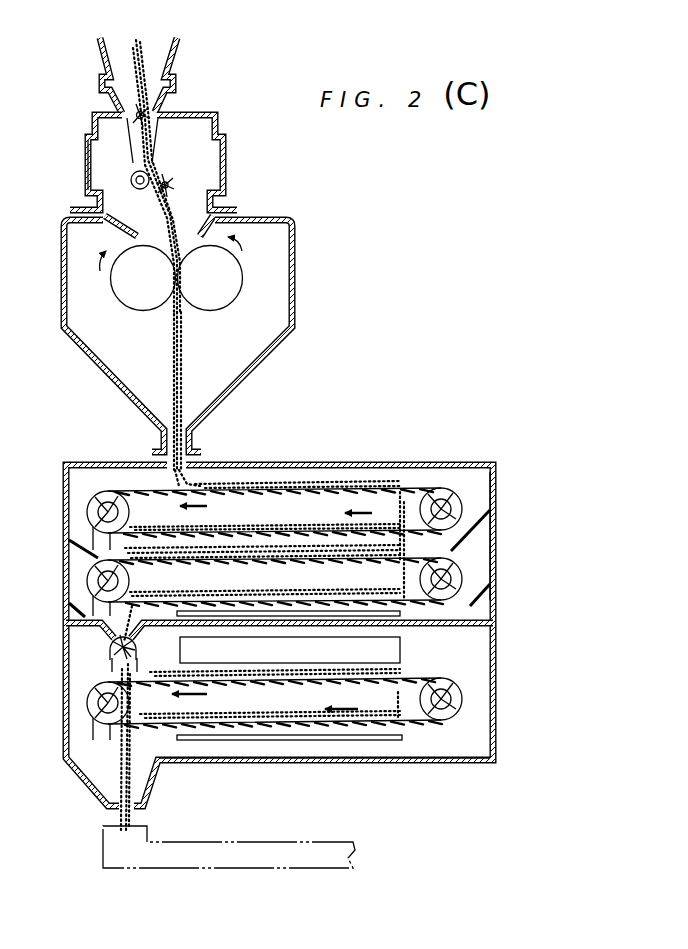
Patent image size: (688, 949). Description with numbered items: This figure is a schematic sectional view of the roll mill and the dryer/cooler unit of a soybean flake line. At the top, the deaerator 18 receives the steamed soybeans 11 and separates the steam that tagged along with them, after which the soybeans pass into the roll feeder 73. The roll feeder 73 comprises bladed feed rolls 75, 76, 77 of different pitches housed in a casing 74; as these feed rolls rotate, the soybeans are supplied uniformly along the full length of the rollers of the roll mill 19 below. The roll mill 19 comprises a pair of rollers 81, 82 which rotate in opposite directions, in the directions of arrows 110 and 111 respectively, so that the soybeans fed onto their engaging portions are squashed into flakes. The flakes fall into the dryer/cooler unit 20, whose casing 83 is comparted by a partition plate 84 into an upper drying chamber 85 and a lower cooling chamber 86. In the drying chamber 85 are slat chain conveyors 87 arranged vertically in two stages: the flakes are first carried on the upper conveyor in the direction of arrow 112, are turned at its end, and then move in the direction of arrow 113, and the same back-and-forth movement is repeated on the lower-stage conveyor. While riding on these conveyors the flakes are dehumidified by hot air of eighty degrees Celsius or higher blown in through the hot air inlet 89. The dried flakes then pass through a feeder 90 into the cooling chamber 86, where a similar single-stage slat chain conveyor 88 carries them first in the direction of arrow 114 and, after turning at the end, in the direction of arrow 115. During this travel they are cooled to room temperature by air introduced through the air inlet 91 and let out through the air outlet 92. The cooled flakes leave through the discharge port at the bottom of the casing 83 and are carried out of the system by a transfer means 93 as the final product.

The raw soybeans 11 is at (156, 40).
The deaerator 18 is at (103, 57).
The roll feeder 73 is at (220, 125).
The casing 74 is at (92, 146).
The bladed feed roll 75 is at (160, 105).
The bladed feed roll 76 is at (130, 183).
The bladed feed roll 77 is at (170, 188).
The roll mill 19 is at (295, 276).
The roller 81 is at (137, 313).
The roller 82 is at (220, 313).
The arrow 110 is at (100, 269).
The arrow 111 is at (245, 244).
The dryer/cooler unit 20 is at (413, 462).
The drying chamber 85 is at (477, 481).
The partition plate 84 is at (460, 626).
The slat chain conveyor 87 is at (110, 489).
The casing 83 is at (495, 501).
The hot air inlet 89 is at (433, 614).
The arrow 112 is at (183, 504).
The arrow 113 is at (352, 504).
The feeder 90 is at (107, 659).
The air outlet 92 is at (395, 659).
The slat chain conveyor 88 is at (465, 698).
The air inlet 91 is at (287, 741).
The arrow 114 is at (180, 696).
The arrow 115 is at (343, 711).
The cooling chamber 86 is at (463, 745).
The transfer means 93 is at (257, 870).